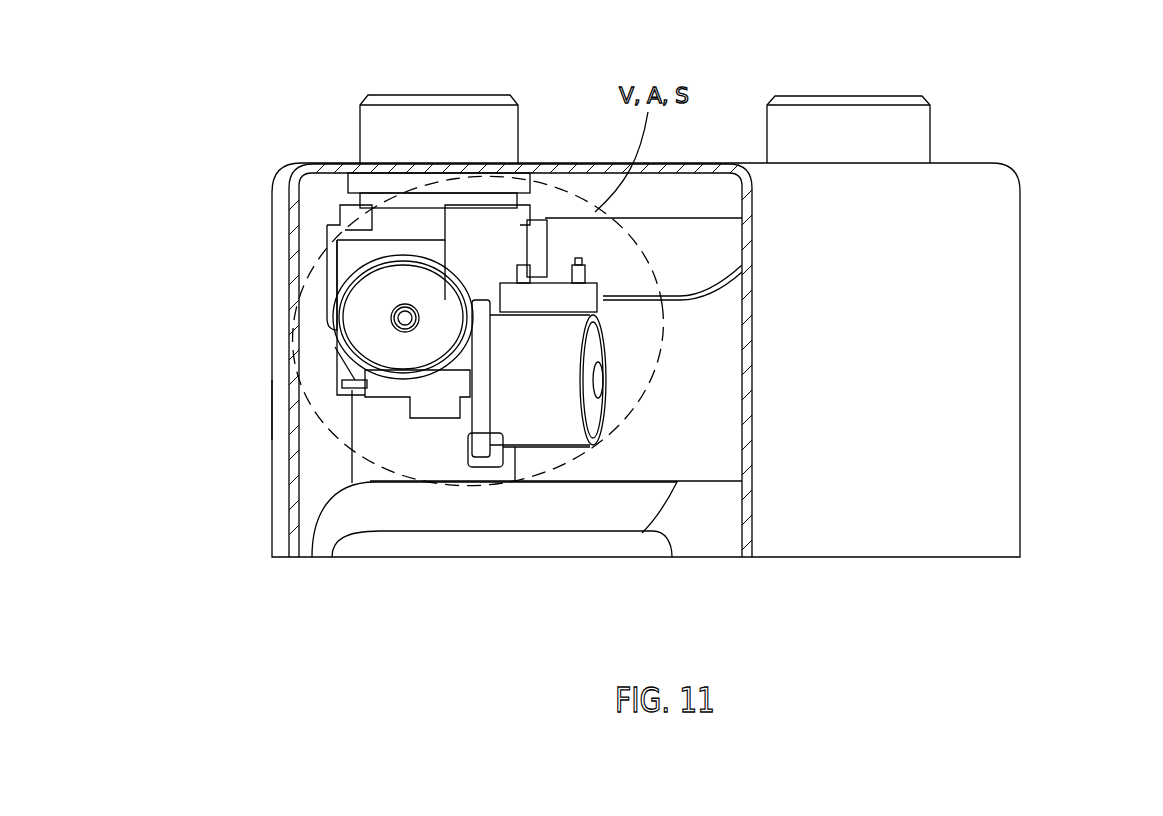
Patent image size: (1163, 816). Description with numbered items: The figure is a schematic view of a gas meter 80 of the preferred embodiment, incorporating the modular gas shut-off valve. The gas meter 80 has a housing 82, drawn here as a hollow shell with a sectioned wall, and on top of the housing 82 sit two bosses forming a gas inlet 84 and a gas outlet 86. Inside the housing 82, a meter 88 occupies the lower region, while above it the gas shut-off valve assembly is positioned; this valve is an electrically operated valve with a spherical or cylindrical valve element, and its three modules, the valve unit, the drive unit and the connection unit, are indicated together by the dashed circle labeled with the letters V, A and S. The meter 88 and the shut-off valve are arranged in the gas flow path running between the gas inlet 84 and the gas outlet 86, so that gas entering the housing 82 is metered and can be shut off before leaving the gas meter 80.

The gas meter 80 is at (1084, 118).
The housing 82 is at (278, 413).
The gas inlet 84 is at (875, 118).
The gas outlet 86 is at (412, 123).
The meter 88 is at (577, 500).